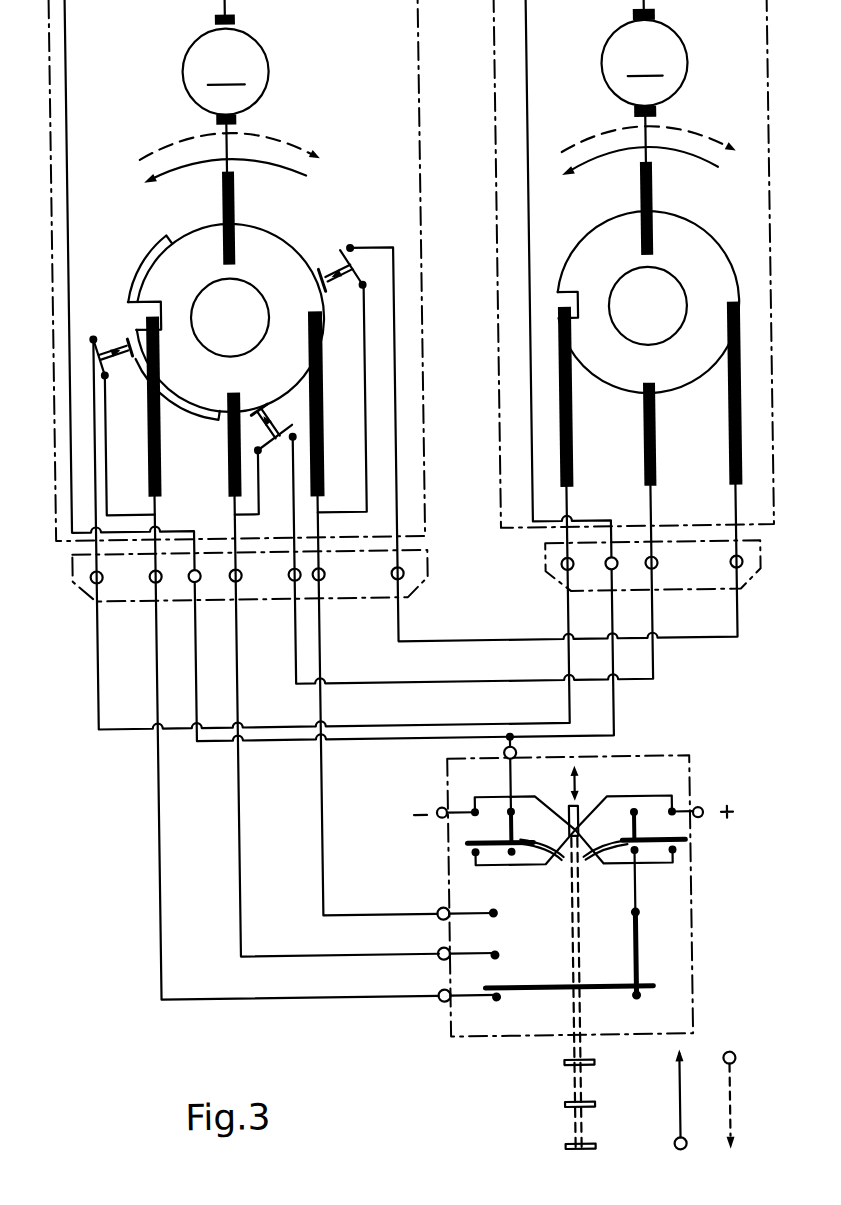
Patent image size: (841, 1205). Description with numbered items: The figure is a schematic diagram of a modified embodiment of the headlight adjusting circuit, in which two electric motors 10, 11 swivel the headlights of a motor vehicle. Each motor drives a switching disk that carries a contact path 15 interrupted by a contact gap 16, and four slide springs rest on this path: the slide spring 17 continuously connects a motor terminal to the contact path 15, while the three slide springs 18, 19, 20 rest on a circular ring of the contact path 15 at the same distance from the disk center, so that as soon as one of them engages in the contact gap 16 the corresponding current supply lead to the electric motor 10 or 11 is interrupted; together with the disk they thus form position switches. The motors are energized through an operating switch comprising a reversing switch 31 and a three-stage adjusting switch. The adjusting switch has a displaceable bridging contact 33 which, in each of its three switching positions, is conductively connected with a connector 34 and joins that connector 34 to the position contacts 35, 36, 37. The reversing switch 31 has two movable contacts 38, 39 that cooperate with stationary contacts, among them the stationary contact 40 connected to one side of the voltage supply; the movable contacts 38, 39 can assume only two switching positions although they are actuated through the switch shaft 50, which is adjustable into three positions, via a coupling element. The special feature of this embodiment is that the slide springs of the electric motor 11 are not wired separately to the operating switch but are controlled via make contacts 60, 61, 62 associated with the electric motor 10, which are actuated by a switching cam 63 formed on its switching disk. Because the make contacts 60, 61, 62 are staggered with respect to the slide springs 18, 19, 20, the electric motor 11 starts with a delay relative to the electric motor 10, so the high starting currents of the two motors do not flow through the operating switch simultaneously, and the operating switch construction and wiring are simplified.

The electric motor 10 is at (269, 68).
The electric motor 11 is at (687, 69).
The contact path 15 is at (275, 248).
The contact gap 16 is at (147, 304).
The slide spring 17 is at (241, 197).
The slide spring 18 is at (163, 456).
The slide spring 19 is at (229, 478).
The slide spring 20 is at (326, 427).
The reversing switch 31 is at (620, 762).
The bridging contact 33 is at (558, 987).
The connector 34 is at (635, 948).
The position contact 35 is at (494, 1002).
The position contact 36 is at (497, 956).
The position contact 37 is at (496, 914).
The movable contact 38 is at (489, 841).
The movable contact 39 is at (654, 838).
The stationary contact 40 is at (667, 808).
The switch shaft 50 is at (567, 1045).
The make contact 60 is at (121, 361).
The make contact 61 is at (272, 456).
The make contact 62 is at (367, 266).
The switching cam 63 is at (157, 256).